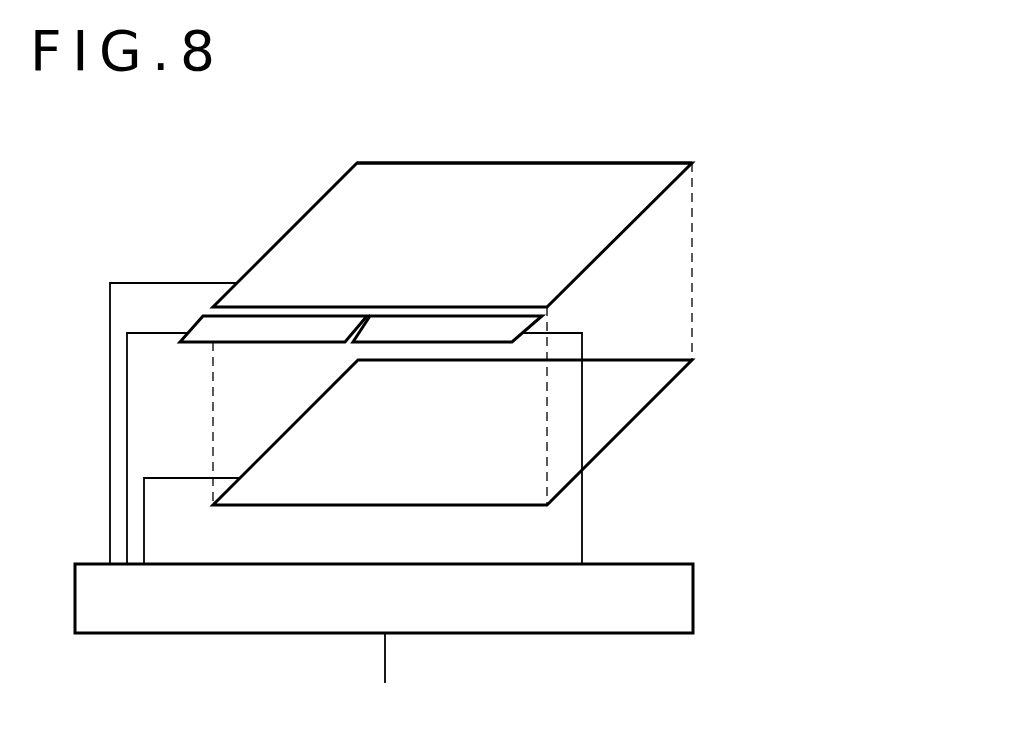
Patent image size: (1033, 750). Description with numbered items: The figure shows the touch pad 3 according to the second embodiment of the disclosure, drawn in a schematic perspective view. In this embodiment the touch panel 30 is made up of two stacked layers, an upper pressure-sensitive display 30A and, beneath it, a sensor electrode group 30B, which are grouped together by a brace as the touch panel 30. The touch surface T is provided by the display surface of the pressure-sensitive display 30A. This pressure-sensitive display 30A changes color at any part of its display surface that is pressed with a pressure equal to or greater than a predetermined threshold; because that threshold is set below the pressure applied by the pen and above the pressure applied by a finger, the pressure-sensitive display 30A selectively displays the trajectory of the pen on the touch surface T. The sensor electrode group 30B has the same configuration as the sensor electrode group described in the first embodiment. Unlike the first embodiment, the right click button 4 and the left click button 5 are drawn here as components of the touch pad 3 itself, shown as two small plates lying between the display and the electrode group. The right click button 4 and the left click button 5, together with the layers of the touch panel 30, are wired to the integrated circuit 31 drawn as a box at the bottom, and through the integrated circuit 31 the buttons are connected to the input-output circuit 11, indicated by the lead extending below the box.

The touch pad 3 is at (191, 116).
The touch surface T is at (487, 170).
The touch panel 30 is at (708, 342).
The pressure-sensitive display 30A is at (668, 168).
The sensor electrode group 30B is at (667, 367).
The right click button 4 is at (466, 327).
The left click button 5 is at (294, 327).
The integrated circuit 31 is at (693, 597).
The input-output circuit 11 is at (386, 676).